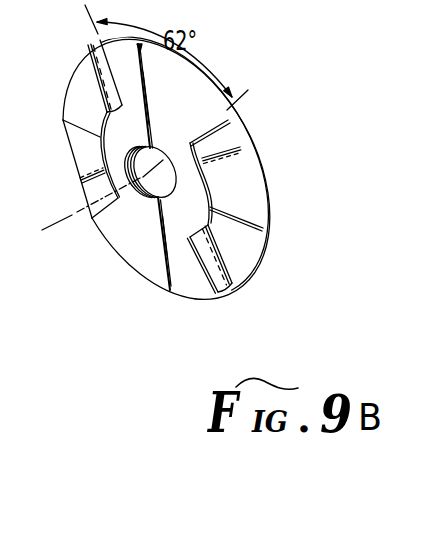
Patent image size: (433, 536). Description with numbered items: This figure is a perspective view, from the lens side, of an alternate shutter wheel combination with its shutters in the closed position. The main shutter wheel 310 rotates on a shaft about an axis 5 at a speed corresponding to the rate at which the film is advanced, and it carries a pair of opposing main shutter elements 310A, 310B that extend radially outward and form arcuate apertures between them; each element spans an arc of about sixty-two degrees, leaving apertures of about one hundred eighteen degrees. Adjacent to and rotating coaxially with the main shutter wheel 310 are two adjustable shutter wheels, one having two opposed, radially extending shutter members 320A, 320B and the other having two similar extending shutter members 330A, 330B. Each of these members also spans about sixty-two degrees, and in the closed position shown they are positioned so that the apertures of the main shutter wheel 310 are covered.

The main shutter wheel 310 is at (186, 287).
The main shutter element 310A is at (138, 252).
The main shutter element 310B is at (169, 95).
The shutter member 320A is at (242, 253).
The shutter member 320B is at (87, 85).
The shutter member 330A is at (88, 163).
The shutter member 330B is at (240, 177).
The axis 5 is at (72, 215).